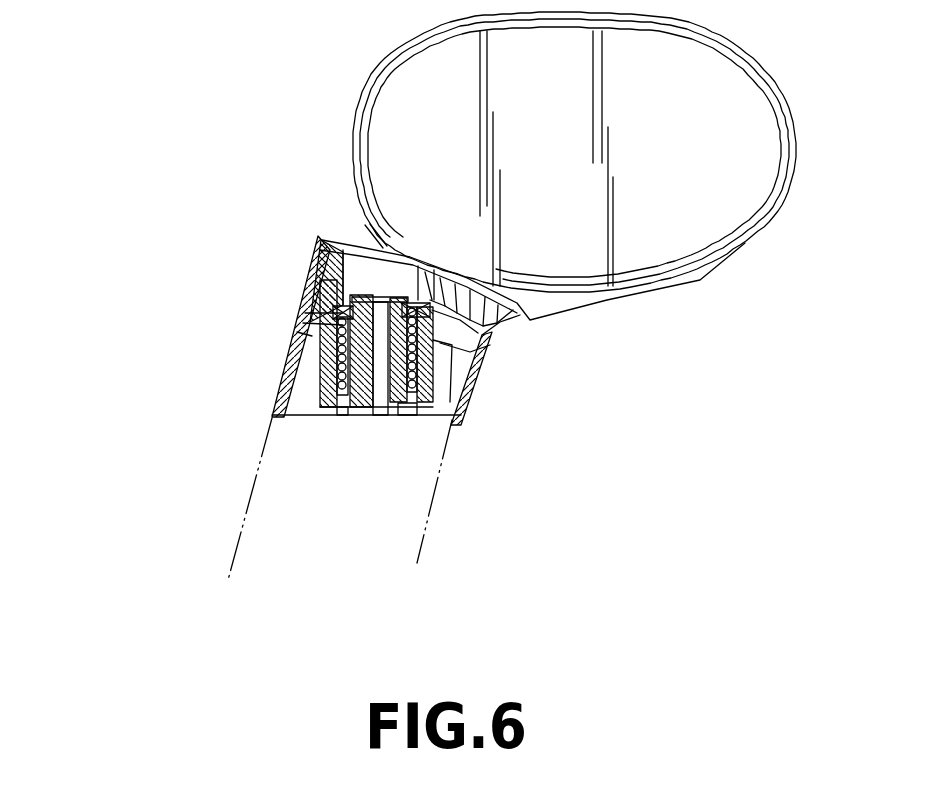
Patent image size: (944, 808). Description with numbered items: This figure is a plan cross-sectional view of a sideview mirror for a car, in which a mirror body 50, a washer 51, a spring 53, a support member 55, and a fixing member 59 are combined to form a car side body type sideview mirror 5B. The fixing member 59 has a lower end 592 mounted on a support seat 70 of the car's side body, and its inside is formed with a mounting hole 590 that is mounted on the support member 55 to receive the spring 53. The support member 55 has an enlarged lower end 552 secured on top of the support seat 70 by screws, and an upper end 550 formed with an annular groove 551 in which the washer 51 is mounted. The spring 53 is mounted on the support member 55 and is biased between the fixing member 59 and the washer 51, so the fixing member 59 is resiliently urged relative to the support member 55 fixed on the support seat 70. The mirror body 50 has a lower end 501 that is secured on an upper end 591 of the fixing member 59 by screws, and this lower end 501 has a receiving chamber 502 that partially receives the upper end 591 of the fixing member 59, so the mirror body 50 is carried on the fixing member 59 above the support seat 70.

The mirror body 50 is at (780, 123).
The washer 51 is at (477, 338).
The spring 53 is at (453, 380).
The support member 55 is at (322, 372).
The fixing member 59 is at (308, 378).
The support seat 70 is at (422, 548).
The lower end of the mirror body 501 is at (303, 312).
The receiving chamber 502 is at (453, 348).
The upper end of the support member 550 is at (317, 283).
The annular groove 551 is at (297, 332).
The enlarged lower end of the support member 552 is at (452, 418).
The mounting hole 590 is at (345, 420).
The upper end of the fixing member 591 is at (302, 321).
The lower end of the fixing member 592 is at (278, 405).
The car side body type sideview mirror 5B is at (772, 349).